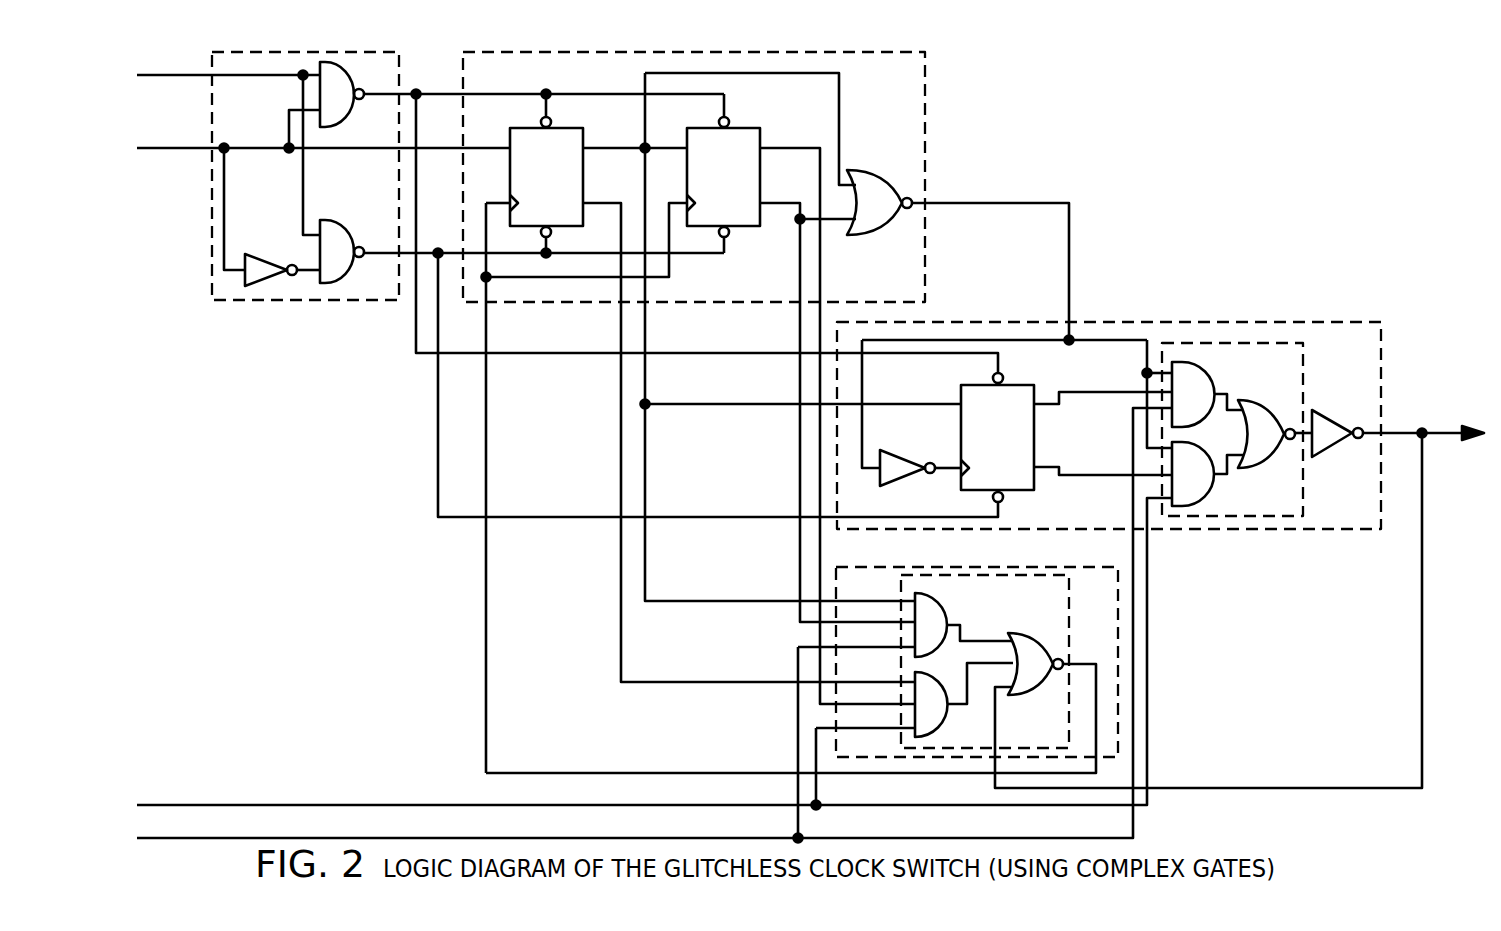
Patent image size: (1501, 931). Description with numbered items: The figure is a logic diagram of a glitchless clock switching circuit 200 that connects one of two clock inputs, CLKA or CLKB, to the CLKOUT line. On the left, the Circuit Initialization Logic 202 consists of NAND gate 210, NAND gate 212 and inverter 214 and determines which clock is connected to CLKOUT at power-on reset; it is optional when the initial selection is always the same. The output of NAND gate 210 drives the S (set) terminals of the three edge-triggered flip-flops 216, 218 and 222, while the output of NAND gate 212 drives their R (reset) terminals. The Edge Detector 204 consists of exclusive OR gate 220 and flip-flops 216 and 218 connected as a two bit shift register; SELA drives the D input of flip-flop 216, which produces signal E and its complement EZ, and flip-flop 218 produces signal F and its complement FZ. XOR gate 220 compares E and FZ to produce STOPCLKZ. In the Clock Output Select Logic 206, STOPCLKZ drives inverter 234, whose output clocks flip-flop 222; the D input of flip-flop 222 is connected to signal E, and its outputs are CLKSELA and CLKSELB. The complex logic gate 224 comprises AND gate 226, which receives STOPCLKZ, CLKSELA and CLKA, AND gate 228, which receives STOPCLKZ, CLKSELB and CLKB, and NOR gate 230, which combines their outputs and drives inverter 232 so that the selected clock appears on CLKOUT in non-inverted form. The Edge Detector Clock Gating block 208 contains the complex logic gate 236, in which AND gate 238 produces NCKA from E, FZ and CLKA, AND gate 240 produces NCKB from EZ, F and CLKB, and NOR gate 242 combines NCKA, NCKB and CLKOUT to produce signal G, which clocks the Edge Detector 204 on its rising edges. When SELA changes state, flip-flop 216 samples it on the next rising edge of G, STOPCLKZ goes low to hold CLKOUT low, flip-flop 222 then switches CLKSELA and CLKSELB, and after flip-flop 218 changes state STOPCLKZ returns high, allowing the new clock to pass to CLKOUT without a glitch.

The glitchless clock switching circuit 200 is at (1184, 127).
The Circuit Initialization Logic 202 is at (396, 83).
The Edge Detector 204 is at (899, 93).
The Clock Output Select Logic 206 is at (1367, 353).
The Edge Detector Clock Gating block 208 is at (1119, 595).
The NAND gate 210 is at (333, 108).
The NAND gate 212 is at (330, 236).
The inverter 214 is at (260, 260).
The flip-flop 216 is at (532, 130).
The flip-flop 218 is at (710, 130).
The exclusive OR gate 220 is at (877, 183).
The flip-flop 222 is at (1011, 383).
The complex logic gate 224 is at (1298, 497).
The AND gate 226 is at (1195, 369).
The AND gate 228 is at (1195, 492).
The NOR gate 230 is at (1265, 443).
The inverter 232 is at (1332, 423).
The inverter 234 is at (888, 478).
The complex logic gate 236 is at (1062, 603).
The AND gate 238 is at (930, 602).
The AND gate 240 is at (928, 722).
The NOR gate 242 is at (1027, 687).